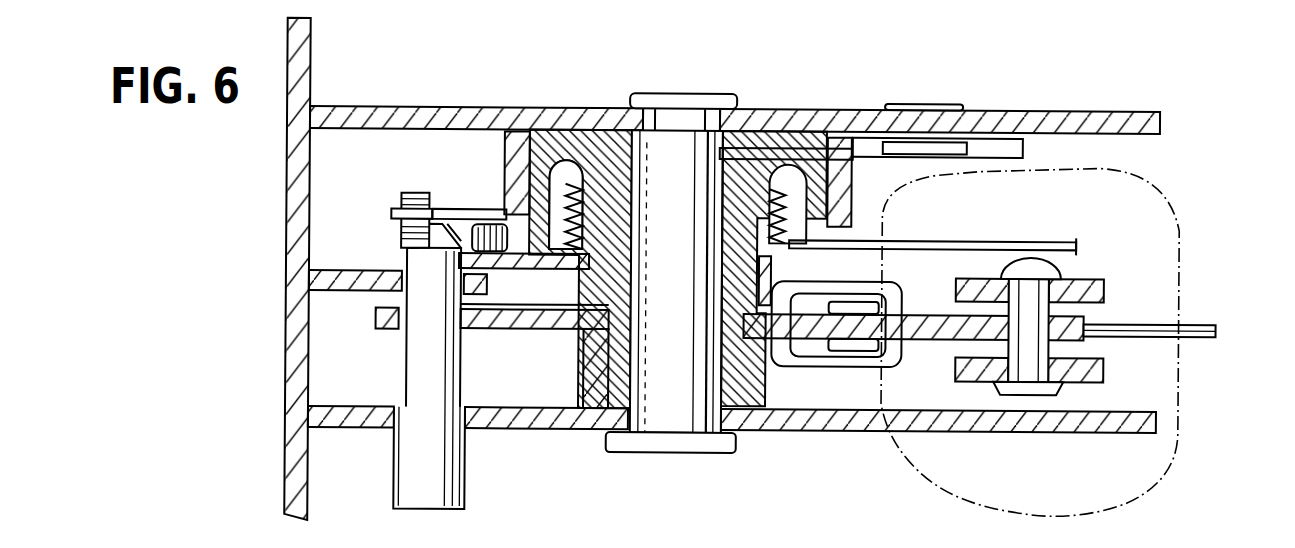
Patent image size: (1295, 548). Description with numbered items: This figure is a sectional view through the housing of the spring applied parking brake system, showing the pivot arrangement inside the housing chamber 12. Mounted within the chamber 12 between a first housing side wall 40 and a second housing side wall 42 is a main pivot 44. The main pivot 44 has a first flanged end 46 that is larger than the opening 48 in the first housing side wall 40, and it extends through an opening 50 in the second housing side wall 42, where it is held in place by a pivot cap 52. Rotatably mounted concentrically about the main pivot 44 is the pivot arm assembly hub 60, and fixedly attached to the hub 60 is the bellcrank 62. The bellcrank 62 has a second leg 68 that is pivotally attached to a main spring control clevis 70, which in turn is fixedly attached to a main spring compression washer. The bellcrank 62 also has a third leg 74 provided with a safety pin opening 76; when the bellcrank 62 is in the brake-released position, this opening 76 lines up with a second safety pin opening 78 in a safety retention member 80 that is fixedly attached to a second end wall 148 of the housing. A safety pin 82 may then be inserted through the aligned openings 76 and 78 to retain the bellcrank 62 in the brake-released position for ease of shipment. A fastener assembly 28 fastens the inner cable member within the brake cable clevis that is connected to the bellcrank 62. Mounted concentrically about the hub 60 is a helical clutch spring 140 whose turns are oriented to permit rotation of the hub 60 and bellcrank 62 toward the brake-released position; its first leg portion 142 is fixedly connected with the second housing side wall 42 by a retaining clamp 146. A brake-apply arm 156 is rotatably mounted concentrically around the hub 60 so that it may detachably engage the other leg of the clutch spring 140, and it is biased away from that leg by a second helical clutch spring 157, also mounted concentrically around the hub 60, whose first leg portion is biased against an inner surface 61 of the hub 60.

The chamber 12 is at (1093, 260).
The fastener assembly 28 is at (832, 362).
The first housing side wall 40 is at (1000, 437).
The second housing side wall 42 is at (835, 108).
The main pivot 44 is at (680, 380).
The first flanged end 46 is at (660, 440).
The opening 48 is at (598, 428).
The opening 50 is at (617, 108).
The pivot cap 52 is at (700, 101).
The pivot arm assembly hub 60 is at (558, 150).
The inner surface 61 is at (520, 140).
The bellcrank 62 is at (753, 370).
The second leg 68 is at (930, 320).
The main spring control clevis 70 is at (1105, 287).
The third leg 74 is at (495, 330).
The safety pin opening 76 is at (385, 318).
The second safety pin opening 78 is at (395, 270).
The safety retention member 80 is at (380, 287).
The safety pin 82 is at (423, 360).
The helical clutch spring 140 is at (860, 175).
The first leg portion 142 is at (1030, 145).
The retaining clamp 146 is at (920, 160).
The second end wall 148 is at (312, 212).
The brake-apply arm 156 is at (772, 270).
The second helical clutch spring 157 is at (838, 140).